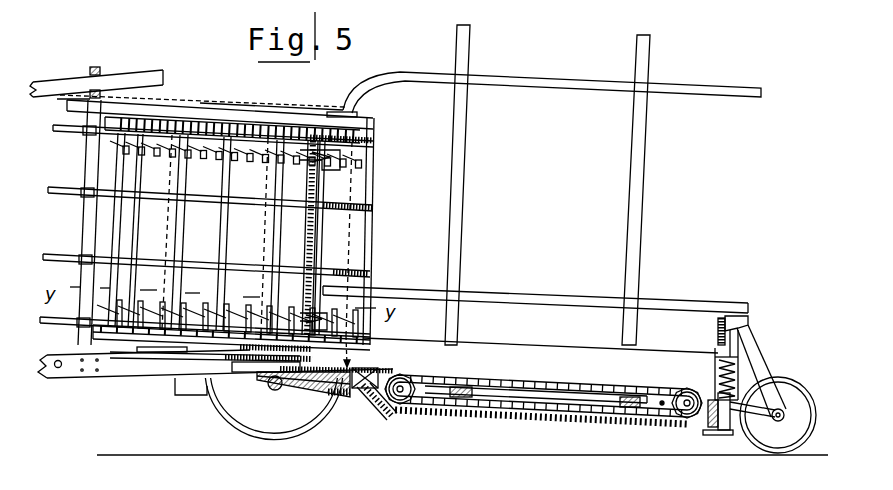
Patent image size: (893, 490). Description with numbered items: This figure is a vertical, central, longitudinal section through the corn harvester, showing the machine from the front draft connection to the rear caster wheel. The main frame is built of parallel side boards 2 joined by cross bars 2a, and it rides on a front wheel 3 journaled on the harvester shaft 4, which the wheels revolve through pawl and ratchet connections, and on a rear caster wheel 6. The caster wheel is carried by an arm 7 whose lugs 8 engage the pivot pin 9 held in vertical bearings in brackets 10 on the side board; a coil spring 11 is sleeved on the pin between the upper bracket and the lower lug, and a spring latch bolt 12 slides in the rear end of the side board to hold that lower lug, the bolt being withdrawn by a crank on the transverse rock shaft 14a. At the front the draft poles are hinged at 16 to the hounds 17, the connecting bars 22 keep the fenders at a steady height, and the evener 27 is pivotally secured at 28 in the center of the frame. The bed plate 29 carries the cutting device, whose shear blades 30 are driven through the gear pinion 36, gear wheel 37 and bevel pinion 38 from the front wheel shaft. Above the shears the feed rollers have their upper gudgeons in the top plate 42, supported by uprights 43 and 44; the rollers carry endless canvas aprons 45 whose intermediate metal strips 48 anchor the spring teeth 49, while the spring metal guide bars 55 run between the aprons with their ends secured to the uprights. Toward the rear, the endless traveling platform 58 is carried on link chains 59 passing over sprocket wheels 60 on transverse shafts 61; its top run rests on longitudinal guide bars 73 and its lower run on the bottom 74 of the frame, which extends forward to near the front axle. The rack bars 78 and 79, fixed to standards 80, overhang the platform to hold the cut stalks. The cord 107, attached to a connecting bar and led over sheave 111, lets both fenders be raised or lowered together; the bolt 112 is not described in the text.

The side board 2 is at (187, 391).
The cross bar 2a is at (460, 386).
The front wheel 3 is at (213, 422).
The harvester shaft 4 is at (275, 390).
The rear wheel 6 is at (792, 388).
The arm 7 is at (750, 353).
The lug 8 is at (739, 323).
The pivot pin 9 is at (718, 341).
The bracket 10 is at (675, 352).
The coil spring 11 is at (717, 370).
The spring latch bolt 12 is at (725, 436).
The transverse rock shaft 14a is at (662, 404).
The hinge 16 is at (60, 366).
The hound 17 is at (123, 368).
The connecting bar 22 is at (164, 74).
The evener 27 is at (351, 408).
The pivot 28 is at (332, 403).
The bed plate 29 is at (540, 369).
The shear blade 30 is at (165, 356).
The gear pinion 36 is at (240, 360).
The gear wheel 37 is at (311, 349).
The bevel pinion 38 is at (308, 359).
The top plate 42 is at (231, 111).
The upright 43 is at (88, 212).
The upright 44 is at (364, 238).
The endless canvas apron 45 is at (226, 234).
The intermediate metal strip 48 is at (151, 154).
The spring teeth 49 is at (210, 157).
The spring metal guide bar 55 is at (376, 136).
The endless traveling platform 58 is at (531, 381).
The endless link chain 59 is at (432, 376).
The sprocket wheel 60 is at (405, 389).
The transverse shaft 61 is at (404, 398).
The longitudinal guide bar 73 is at (588, 391).
The bottom 74 is at (572, 420).
The rack bar 78 is at (542, 297).
The rack bar 79 is at (546, 73).
The standard 80 is at (457, 250).
The cord 107 is at (282, 110).
The sheave 111 is at (342, 110).
The bolt 112 is at (103, 70).